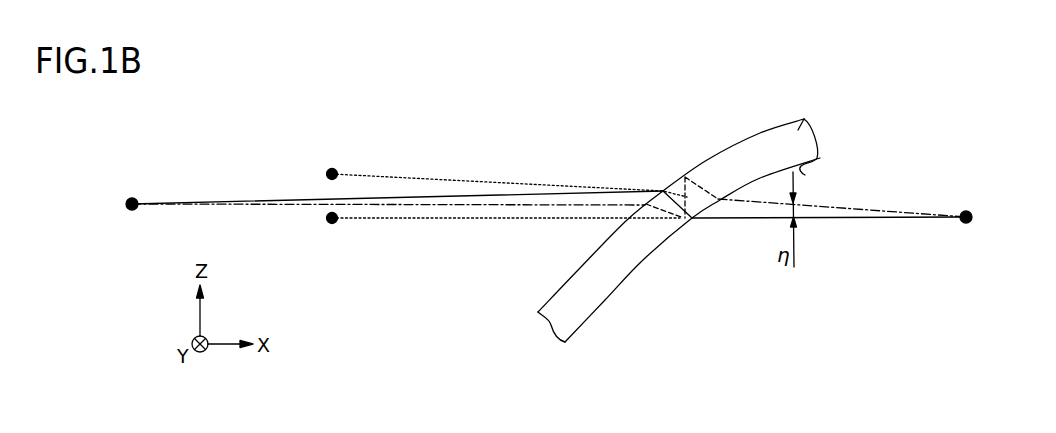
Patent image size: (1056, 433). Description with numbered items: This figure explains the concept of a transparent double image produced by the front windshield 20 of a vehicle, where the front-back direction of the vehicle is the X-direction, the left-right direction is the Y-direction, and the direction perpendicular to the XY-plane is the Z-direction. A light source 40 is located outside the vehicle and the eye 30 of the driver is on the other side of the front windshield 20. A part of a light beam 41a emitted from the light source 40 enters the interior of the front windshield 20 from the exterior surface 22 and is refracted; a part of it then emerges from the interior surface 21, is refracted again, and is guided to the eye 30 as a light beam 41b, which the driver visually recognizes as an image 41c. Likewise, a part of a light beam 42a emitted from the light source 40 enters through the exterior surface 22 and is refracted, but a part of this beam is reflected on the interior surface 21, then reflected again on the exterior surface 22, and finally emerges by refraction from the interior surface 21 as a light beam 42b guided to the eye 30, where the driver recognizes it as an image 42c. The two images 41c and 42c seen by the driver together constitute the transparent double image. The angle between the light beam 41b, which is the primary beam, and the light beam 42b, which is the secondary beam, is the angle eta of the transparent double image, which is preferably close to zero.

The front windshield 20 is at (705, 211).
The interior surface 21 is at (825, 157).
The exterior surface 22 is at (742, 140).
The eye 30 is at (972, 210).
The light source 40 is at (137, 198).
The light beam 41a is at (308, 197).
The light beam 41b is at (822, 219).
The image 41c is at (334, 226).
The light beam 42a is at (287, 208).
The light beam 42b is at (835, 205).
The image 42c is at (334, 171).